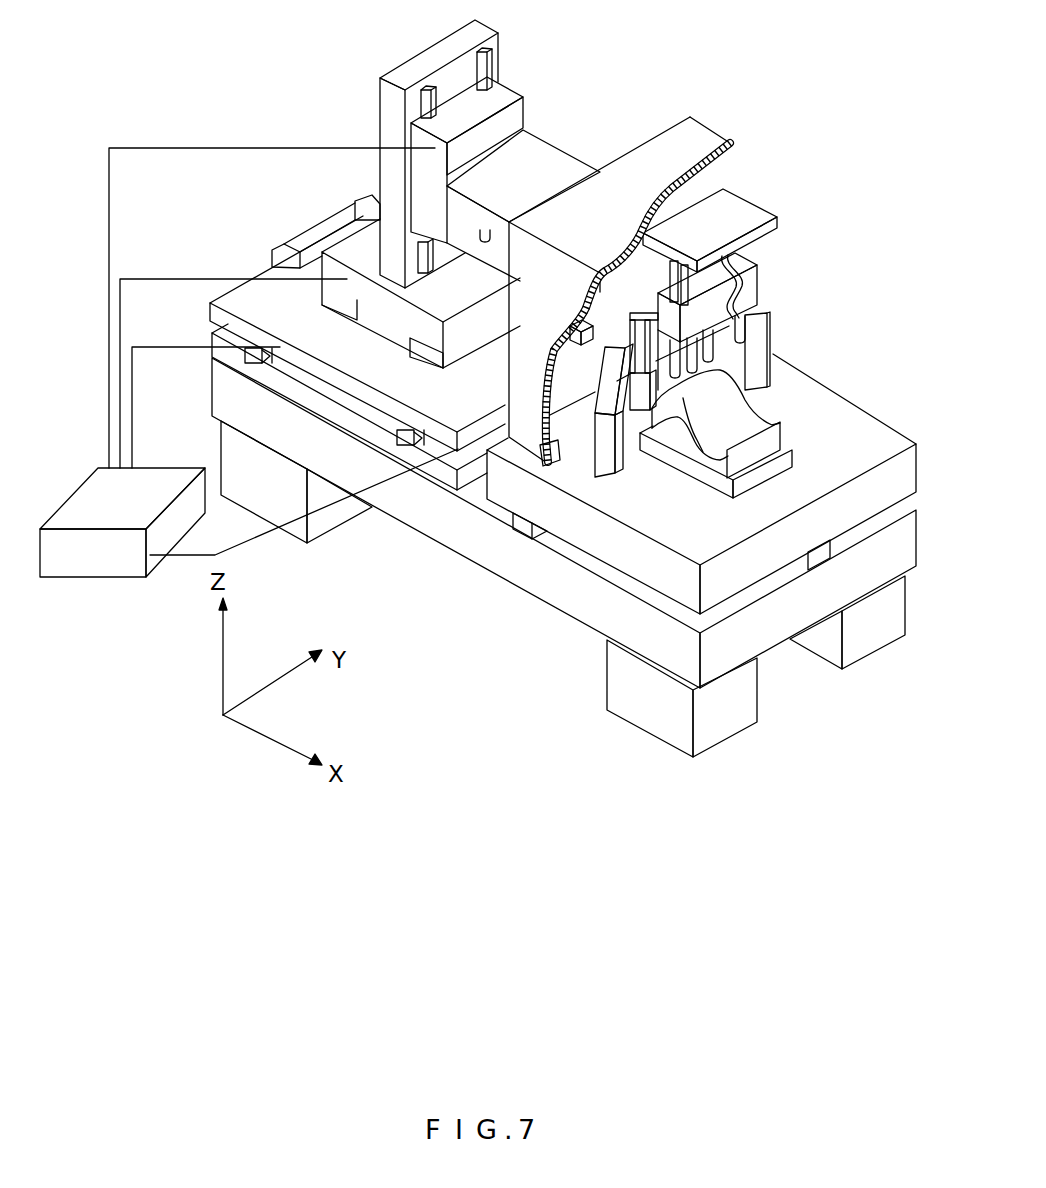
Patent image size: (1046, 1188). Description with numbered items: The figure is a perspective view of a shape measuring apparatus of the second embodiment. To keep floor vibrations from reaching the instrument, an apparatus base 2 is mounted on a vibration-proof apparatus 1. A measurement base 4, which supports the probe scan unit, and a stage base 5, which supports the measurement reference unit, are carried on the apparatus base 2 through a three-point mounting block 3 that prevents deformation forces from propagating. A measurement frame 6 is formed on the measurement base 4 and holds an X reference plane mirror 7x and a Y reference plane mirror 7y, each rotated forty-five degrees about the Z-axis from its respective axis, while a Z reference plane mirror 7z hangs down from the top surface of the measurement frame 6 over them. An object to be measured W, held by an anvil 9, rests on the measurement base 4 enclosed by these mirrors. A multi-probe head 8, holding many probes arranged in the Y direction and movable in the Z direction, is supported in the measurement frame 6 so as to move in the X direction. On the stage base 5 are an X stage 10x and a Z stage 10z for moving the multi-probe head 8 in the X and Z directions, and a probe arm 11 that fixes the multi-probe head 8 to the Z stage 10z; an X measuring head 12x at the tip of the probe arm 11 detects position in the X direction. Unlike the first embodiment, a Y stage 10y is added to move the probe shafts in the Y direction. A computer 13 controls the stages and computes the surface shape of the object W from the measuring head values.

The vibration-proof apparatus 1 is at (728, 726).
The apparatus base 2 is at (458, 530).
The three-point mounting block 3 is at (522, 525).
The measurement base 4 is at (862, 428).
The stage base 5 is at (420, 462).
The measurement frame 6 is at (700, 140).
The X reference plane mirror 7x is at (768, 343).
The Y reference plane mirror 7y is at (603, 463).
The Z reference plane mirror 7z is at (727, 198).
The multi-probe head 8 is at (755, 283).
The anvil 9 is at (786, 426).
The X stage 10x is at (343, 247).
The Y stage 10y is at (249, 295).
The Z stage 10z is at (522, 117).
The probe arm 11 is at (546, 170).
The X measuring head 12x is at (637, 410).
The computer 13 is at (102, 568).
The object to be measured W is at (743, 422).